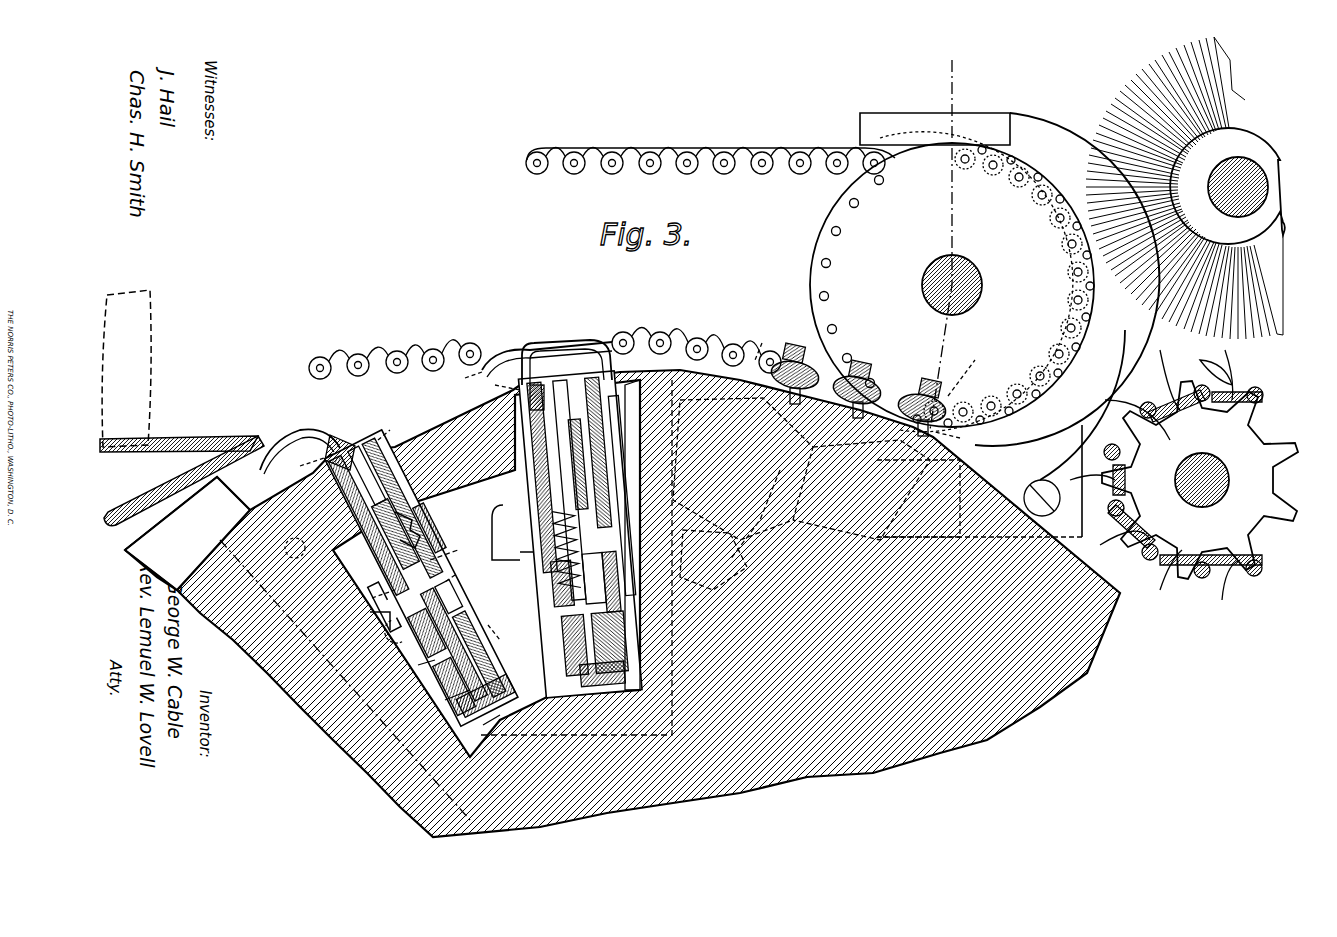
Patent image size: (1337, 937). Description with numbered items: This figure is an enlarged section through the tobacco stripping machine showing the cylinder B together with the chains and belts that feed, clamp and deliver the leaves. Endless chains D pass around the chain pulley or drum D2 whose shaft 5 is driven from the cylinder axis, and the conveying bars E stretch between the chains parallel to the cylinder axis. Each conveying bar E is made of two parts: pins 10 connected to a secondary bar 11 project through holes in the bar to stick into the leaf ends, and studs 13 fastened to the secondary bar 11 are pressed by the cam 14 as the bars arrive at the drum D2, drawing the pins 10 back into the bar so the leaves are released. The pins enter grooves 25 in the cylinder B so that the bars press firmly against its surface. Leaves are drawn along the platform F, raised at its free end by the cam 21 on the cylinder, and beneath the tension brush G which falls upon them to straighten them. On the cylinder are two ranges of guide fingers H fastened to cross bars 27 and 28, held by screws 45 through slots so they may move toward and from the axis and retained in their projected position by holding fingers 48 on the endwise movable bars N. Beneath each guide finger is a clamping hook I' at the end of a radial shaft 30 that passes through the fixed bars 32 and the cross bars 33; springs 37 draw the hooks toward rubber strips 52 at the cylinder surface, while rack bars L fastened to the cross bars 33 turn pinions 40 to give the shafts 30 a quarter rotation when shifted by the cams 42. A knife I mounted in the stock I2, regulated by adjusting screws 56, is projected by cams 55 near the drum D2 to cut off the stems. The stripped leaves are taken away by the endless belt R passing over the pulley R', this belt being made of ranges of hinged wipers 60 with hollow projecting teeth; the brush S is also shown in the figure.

The cylinder B is at (622, 603).
The cam 21 is at (187, 533).
The platform F is at (182, 469).
The tension brush G is at (137, 368).
The guide fingers H is at (500, 338).
The clamping hook I' is at (382, 425).
The stock I2 is at (622, 535).
The rubber strips 52 is at (335, 437).
The cross bar 27 is at (378, 440).
The adjusting screws 56 is at (585, 345).
The bars or supports 32 is at (530, 470).
The screws 45 is at (412, 530).
The holding fingers 48 is at (524, 529).
The springs 37 is at (476, 555).
The bars N is at (535, 580).
The rack bars L is at (561, 613).
The pinions 40 is at (497, 675).
The cross bars 33 is at (522, 643).
The shafts 30 is at (516, 500).
The cross bar 28 is at (632, 495).
The endless chains D is at (602, 250).
The chain pulley D2 is at (952, 245).
The shaft 5 is at (960, 285).
The cam 14 is at (1009, 296).
The conveying bars E is at (955, 405).
The secondary bar 11 is at (864, 357).
The studs 13 is at (861, 385).
The pins 10 is at (970, 370).
The grooves 25 is at (801, 468).
The cams 55 is at (765, 497).
The inclined planes or cams 42 is at (881, 525).
The brush S is at (1185, 191).
The pulley R' is at (1200, 480).
The endless belt R is at (1166, 475).
The wipers 60 is at (1206, 371).